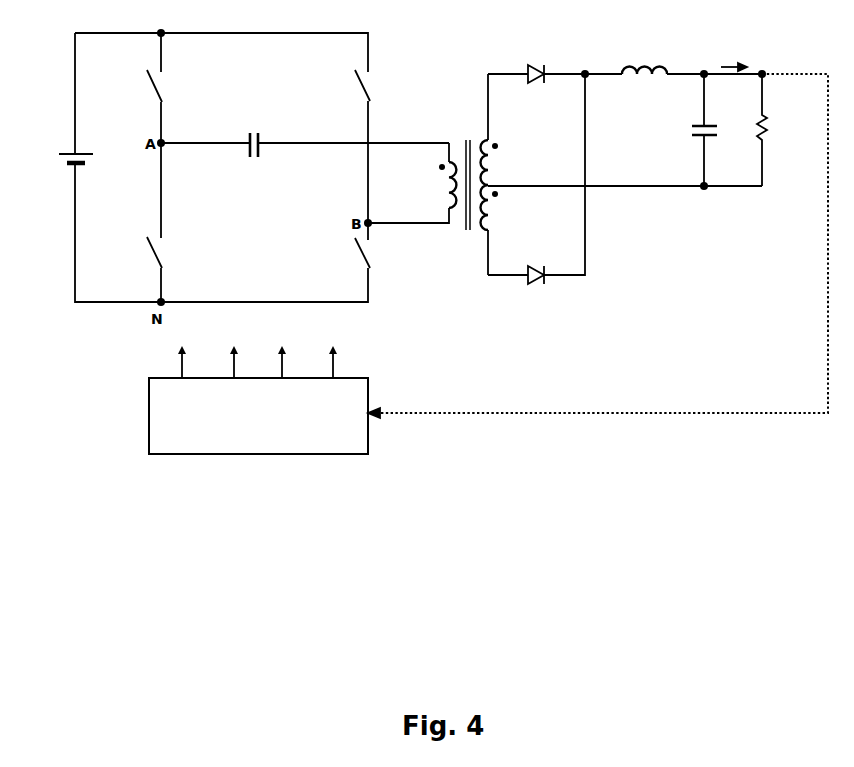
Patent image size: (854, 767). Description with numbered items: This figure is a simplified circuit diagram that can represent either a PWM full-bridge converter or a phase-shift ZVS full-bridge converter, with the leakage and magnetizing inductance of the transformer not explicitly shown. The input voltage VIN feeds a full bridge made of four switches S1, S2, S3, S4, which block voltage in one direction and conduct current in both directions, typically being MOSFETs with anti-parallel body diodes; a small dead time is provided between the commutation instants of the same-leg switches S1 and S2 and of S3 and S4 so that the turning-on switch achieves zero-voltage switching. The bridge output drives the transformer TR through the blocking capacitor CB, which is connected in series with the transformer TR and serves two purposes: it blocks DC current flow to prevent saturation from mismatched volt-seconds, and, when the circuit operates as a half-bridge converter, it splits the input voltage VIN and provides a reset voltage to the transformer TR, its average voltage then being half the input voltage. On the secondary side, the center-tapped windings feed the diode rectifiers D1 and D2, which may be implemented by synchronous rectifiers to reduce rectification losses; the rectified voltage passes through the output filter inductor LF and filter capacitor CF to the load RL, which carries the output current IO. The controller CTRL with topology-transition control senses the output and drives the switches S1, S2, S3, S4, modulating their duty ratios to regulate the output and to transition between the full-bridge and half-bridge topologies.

The input voltage VIN is at (61, 164).
The switch S1 is at (140, 88).
The switch S2 is at (139, 222).
The switch S3 is at (345, 245).
The switch S4 is at (347, 145).
The blocking capacitor CB is at (305, 149).
The transformer TR is at (565, 174).
The secondary-side diode rectifier D1 is at (536, 63).
The secondary-side diode rectifier D2 is at (536, 179).
The filter inductor LF is at (673, 88).
The filter capacitor CF is at (691, 130).
The load resistor RL is at (763, 130).
The output current IO is at (734, 56).
The controller with topology-transition control CTRL is at (258, 390).